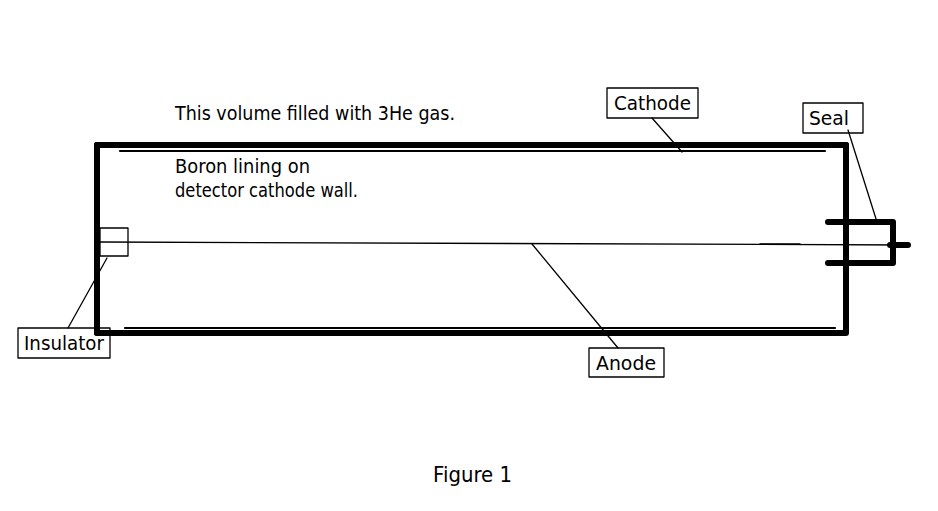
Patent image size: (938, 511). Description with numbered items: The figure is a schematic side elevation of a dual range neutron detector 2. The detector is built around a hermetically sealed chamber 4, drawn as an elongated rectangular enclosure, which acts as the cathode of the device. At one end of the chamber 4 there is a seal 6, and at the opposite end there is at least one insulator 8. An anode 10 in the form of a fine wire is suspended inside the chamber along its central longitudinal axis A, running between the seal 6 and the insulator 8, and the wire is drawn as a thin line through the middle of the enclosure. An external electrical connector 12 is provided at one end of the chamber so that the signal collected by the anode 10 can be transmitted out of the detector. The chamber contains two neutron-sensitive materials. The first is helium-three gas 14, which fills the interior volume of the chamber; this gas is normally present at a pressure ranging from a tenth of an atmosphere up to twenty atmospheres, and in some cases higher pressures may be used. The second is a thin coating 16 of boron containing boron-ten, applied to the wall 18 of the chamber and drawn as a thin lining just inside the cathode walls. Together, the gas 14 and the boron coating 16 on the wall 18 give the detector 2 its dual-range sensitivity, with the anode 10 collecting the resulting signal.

The dual range neutron detector 2 is at (401, 61).
The hermetically sealed chamber 4 is at (738, 145).
The seal 6 is at (878, 222).
The insulator 8 is at (124, 257).
The anode 10 is at (625, 244).
The external electrical connector 12 is at (908, 250).
The 3He gas 14 is at (590, 175).
The thin coating of boron 16 is at (443, 152).
The wall of the chamber 18 is at (138, 145).
The central longitudinal axis A is at (775, 245).